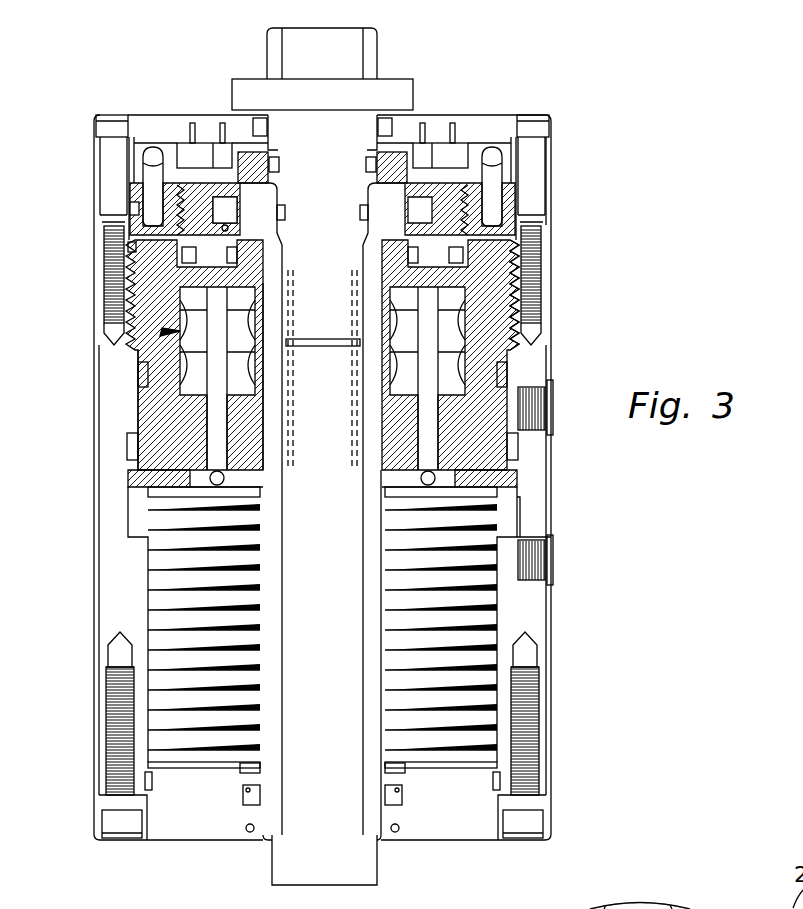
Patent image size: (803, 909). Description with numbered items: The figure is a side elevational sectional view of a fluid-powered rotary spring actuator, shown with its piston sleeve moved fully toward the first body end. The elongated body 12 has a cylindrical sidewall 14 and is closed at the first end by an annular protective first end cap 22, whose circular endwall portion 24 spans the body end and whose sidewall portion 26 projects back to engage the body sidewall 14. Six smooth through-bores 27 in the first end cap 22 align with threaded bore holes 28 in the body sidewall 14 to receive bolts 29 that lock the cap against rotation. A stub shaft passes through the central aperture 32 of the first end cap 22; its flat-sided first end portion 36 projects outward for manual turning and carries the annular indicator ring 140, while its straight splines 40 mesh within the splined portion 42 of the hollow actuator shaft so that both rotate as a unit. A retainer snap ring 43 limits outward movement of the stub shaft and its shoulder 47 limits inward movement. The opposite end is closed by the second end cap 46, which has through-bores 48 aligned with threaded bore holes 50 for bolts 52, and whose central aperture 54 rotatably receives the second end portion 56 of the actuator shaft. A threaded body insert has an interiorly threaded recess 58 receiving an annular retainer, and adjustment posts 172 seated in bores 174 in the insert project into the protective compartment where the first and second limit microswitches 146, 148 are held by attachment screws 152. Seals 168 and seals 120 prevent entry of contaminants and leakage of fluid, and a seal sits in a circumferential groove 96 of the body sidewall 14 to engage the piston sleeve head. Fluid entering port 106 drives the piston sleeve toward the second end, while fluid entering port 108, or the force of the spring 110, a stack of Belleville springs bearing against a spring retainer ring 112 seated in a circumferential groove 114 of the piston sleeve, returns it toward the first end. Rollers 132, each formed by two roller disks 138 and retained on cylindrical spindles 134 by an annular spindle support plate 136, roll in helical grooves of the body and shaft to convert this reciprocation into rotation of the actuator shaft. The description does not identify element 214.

The body 12 is at (540, 522).
The cylindrical sidewall 14 is at (537, 522).
The first end cap 22 is at (502, 116).
The endwall portion 24 is at (143, 115).
The sidewall portion 26 is at (548, 212).
The smooth through-bores 27 is at (538, 142).
The threaded bore holes 28 is at (538, 337).
The bolts 29 is at (534, 172).
The central aperture 32 is at (362, 138).
The first end portion 36 is at (267, 55).
The straight splines 40 is at (346, 303).
The splined portion 42 is at (285, 343).
The retainer snap ring 43 is at (277, 150).
The second end cap 46 is at (473, 823).
The shoulder 47 is at (283, 175).
The smooth through-bores 48 is at (548, 815).
The threaded bore holes 50 is at (532, 652).
The bolts 52 is at (120, 648).
The central aperture 54 is at (377, 840).
The second end portion 56 is at (375, 787).
The interiorly threaded recess 58 is at (235, 230).
The circumferential groove 96 is at (133, 443).
The port 106 is at (532, 430).
The port 108 is at (528, 580).
The spring 110 is at (165, 583).
The spring retainer ring 112 is at (517, 487).
The circumferential groove 114 is at (150, 483).
The seals 120 is at (228, 255).
The force-transmitting rollers 132 is at (165, 333).
The shaft spindles 134 is at (397, 415).
The spindle support plate 136 is at (382, 338).
The roller disks 138 is at (255, 363).
The indicator ring 140 is at (392, 90).
The first limit microswitch 146 is at (143, 122).
The second limit microswitch 148 is at (437, 150).
The attachment screws 152 is at (191, 123).
The seals 168 is at (130, 210).
The adjustment posts 172 is at (490, 205).
The bore 174 is at (125, 245).
The sleeve 214 is at (363, 335).